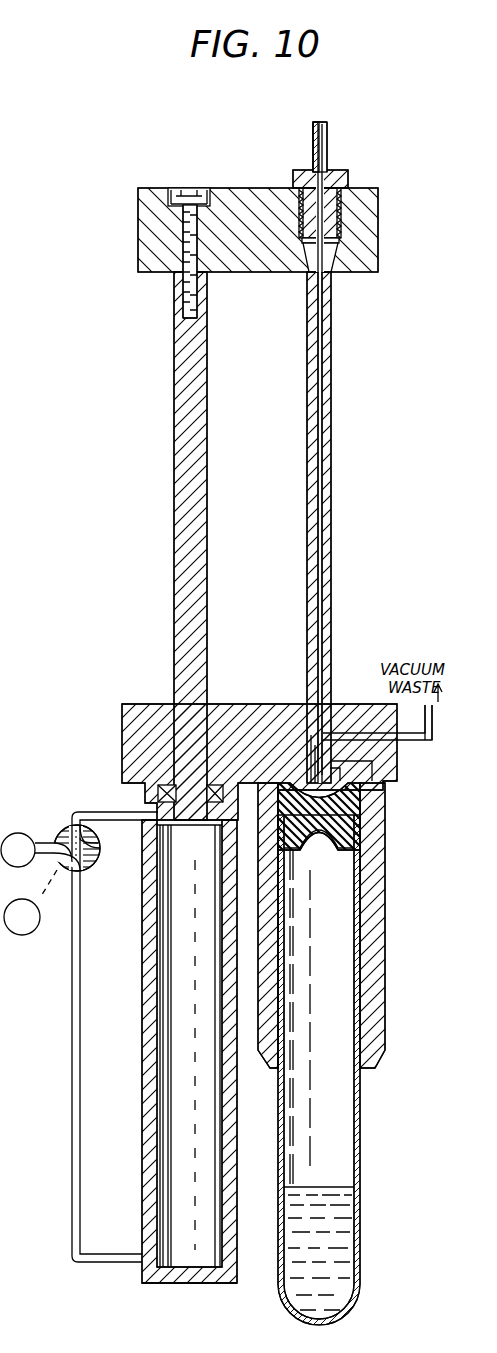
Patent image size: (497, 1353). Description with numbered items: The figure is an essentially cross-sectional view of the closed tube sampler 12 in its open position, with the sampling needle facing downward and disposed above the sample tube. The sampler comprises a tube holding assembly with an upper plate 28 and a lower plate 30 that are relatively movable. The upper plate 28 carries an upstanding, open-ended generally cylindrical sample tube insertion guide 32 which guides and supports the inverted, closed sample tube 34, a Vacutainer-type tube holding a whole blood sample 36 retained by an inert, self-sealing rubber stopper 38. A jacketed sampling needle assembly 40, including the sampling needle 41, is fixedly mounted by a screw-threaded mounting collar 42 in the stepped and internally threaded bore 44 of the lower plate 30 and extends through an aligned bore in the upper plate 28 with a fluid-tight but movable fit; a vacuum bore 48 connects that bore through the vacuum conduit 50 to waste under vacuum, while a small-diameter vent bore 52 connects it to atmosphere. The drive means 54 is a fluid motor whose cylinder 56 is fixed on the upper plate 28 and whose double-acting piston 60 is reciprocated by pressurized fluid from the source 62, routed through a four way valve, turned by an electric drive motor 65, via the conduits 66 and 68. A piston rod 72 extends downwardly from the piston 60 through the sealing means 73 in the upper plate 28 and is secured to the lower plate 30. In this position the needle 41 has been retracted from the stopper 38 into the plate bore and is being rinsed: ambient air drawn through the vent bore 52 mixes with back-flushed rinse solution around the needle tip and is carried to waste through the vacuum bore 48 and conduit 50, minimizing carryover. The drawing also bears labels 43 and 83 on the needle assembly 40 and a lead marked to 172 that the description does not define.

The closed tube sampler 12 is at (395, 1042).
The upper plate 28 is at (122, 740).
The lower plate 30 is at (378, 250).
The sample tube insertion guide 32 is at (385, 954).
The sample tube 34 is at (360, 1140).
The whole blood sample 36 is at (341, 1221).
The stopper 38 is at (345, 848).
The jacketed sampling needle assembly 40 is at (331, 469).
The sampling needle 41 is at (372, 768).
The screw-threaded mounting collar 42 is at (333, 173).
The probe bore 43 is at (315, 748).
The stepped and internally threaded bore 44 is at (343, 206).
The vacuum bore 48 is at (350, 734).
The vacuum conduit 50 is at (438, 735).
The vent bore 52 is at (368, 800).
The closed tube holding assembly drive means 54 is at (193, 1296).
The cylinder 56 is at (152, 1030).
The double-acting piston 60 is at (190, 828).
The pressurized fluid source 62 is at (25, 834).
The electric drive motor 65 is at (23, 935).
The conduit 66 is at (78, 811).
The conduit 68 is at (80, 1141).
The piston rod 72 is at (207, 462).
The sealing means 73 is at (158, 792).
The inner capillary tube 83 is at (312, 142).
The connection to element 172 is at (321, 110).